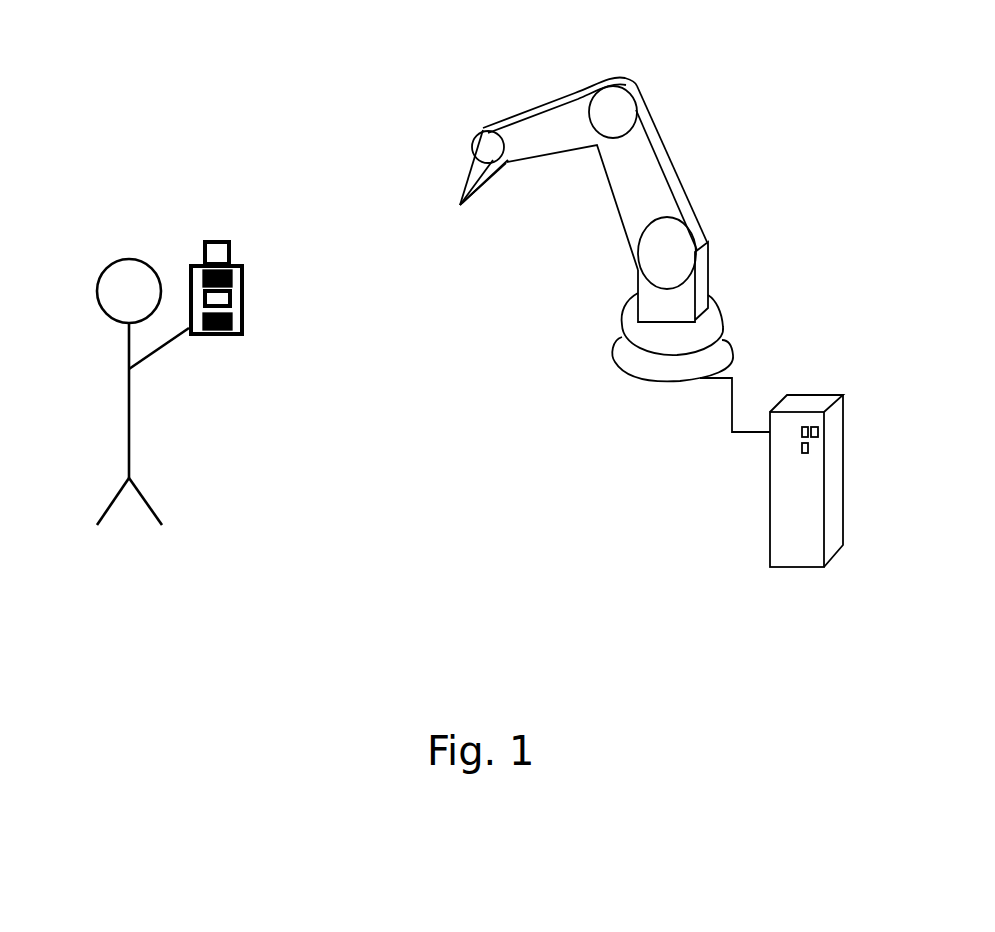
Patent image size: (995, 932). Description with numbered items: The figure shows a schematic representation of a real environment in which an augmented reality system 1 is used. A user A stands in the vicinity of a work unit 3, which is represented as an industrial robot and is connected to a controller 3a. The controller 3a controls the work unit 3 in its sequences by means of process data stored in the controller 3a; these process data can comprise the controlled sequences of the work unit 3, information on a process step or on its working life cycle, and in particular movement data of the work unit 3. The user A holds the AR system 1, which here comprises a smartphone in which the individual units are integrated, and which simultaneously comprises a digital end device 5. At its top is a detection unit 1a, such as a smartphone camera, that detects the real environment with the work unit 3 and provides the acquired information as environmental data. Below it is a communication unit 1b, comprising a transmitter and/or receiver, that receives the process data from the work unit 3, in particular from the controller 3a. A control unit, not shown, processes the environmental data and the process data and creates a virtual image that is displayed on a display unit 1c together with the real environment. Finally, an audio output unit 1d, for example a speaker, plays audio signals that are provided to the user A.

The augmented reality system 1 is at (239, 252).
The digital end device 5 is at (239, 252).
The detection unit 1a is at (225, 240).
The communication unit 1b is at (232, 280).
The display unit 1c is at (232, 300).
The audio output unit 1d is at (230, 327).
The user A is at (129, 418).
The work unit 3 is at (625, 78).
The controller 3a is at (802, 392).